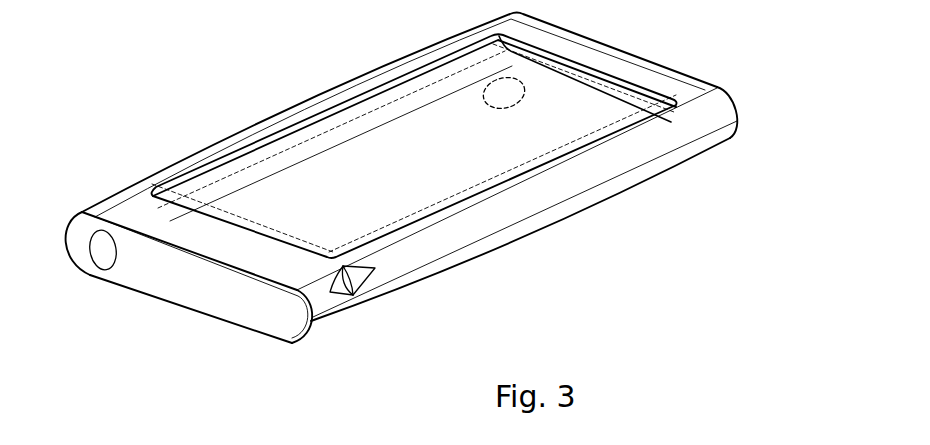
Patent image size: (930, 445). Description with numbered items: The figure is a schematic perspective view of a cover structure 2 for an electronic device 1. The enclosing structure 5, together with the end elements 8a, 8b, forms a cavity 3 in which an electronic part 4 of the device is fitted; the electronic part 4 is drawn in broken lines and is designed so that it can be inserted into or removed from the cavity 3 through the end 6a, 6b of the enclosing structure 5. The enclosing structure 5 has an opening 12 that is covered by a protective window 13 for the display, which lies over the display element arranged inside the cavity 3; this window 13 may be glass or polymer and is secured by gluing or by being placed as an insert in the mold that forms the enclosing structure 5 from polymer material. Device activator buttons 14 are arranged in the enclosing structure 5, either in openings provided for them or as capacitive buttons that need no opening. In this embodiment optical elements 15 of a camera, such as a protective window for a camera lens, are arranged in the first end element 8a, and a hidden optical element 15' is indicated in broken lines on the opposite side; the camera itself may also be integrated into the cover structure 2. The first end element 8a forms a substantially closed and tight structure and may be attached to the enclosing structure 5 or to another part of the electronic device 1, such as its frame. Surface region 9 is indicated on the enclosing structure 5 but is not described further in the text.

The electronic device 1 is at (631, 228).
The cover structure 2 is at (186, 128).
The cavity 3 is at (334, 153).
The electronic part 4 is at (397, 125).
The enclosing structure 5 is at (525, 202).
The end of the enclosing structure 6a is at (252, 359).
The end of the enclosing structure 6b is at (703, 52).
The first end element 8a is at (198, 294).
The end element 8b is at (587, 85).
The top surface 9 is at (206, 104).
The opening 12 is at (673, 179).
The protective window for the display 13 is at (398, 212).
The activator button 14 is at (352, 290).
The optical element of a camera 15 is at (95, 286).
The hidden opening 15' is at (495, 118).